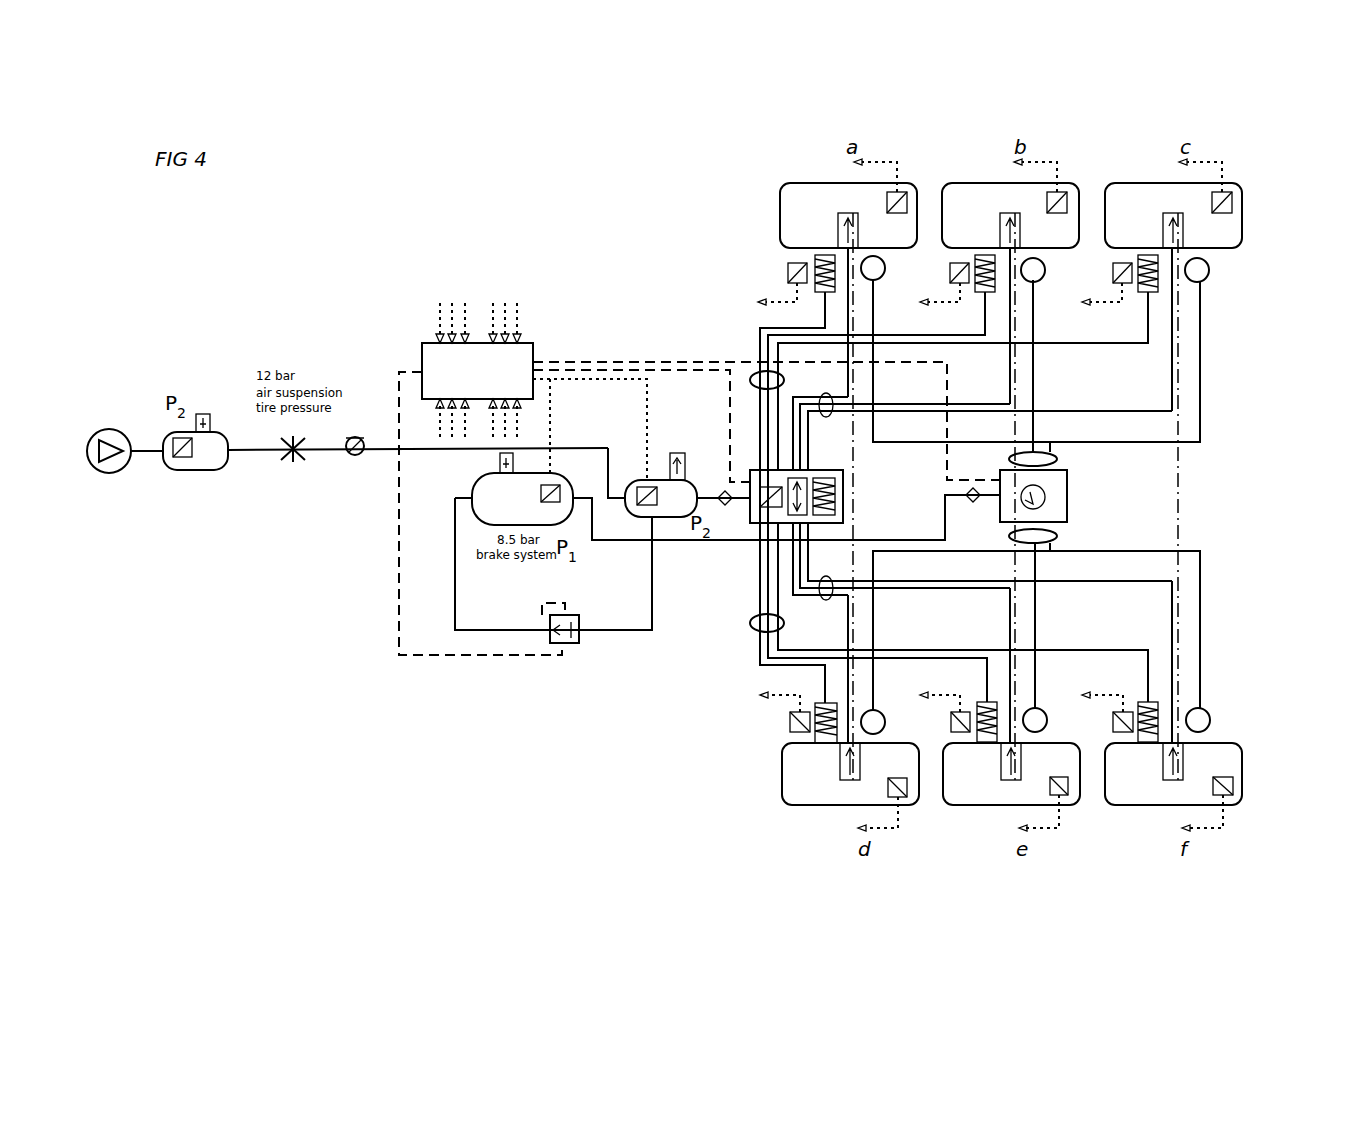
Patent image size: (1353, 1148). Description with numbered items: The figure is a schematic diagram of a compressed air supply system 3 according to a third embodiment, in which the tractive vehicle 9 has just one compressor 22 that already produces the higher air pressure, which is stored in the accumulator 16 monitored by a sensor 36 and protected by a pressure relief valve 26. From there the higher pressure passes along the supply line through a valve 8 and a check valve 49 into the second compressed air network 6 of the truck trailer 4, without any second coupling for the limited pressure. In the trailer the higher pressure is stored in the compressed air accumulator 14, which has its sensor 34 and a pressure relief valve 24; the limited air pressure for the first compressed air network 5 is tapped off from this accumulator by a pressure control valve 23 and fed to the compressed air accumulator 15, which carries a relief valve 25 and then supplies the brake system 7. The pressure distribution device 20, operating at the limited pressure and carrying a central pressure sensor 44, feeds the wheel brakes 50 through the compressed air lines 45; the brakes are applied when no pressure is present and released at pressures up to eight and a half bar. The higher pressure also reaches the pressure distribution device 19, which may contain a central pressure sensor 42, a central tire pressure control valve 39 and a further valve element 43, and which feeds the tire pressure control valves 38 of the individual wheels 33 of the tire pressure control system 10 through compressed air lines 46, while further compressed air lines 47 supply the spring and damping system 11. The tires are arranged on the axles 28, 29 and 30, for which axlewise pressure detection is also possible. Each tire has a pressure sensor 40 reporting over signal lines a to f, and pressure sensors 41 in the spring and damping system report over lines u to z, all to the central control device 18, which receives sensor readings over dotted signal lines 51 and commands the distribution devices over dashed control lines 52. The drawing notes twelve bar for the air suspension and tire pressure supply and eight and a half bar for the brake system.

The compressed air supply system 3 is at (1260, 312).
The truck trailer 4 is at (710, 260).
The first compressed air network 5 is at (455, 586).
The second compressed air network 6 is at (380, 450).
The brake system 7 is at (1067, 514).
The check valve 8 is at (293, 466).
The tractive vehicle 9 is at (185, 376).
The tire pressure control system 10 is at (838, 226).
The spring and damping system 11 is at (818, 294).
The compressed air accumulator 14 is at (624, 482).
The compressed air accumulator 15 is at (566, 478).
The accumulator 16 is at (218, 470).
The central control device 18 is at (530, 342).
The pressure distribution device 19 is at (843, 478).
The pressure distribution device 20 is at (1073, 488).
The compressor 22 is at (102, 432).
The pressure control valve 23 is at (579, 643).
The pressure relief valve 24 is at (686, 462).
The pressure relief valve 25 is at (498, 463).
The pressure relief valve 26 is at (212, 423).
The axle 28 is at (856, 455).
The axle 29 is at (1016, 380).
The axle 30 is at (1180, 480).
The wheel 33 is at (798, 194).
The sensor 34 is at (634, 512).
The sensor 36 is at (176, 462).
The tire pressure control valve 38 is at (862, 226).
The central tire pressure control valve 39 is at (778, 520).
The pressure sensor 40 is at (902, 192).
The pressure sensor 41 is at (788, 270).
The central pressure sensor 42 is at (736, 504).
The solenoid valve 43 is at (828, 520).
The central pressure sensor 44 is at (1000, 522).
The compressed air lines 45 is at (1057, 459).
The compressed air lines 46 is at (828, 414).
The compressed air lines 47 is at (784, 380).
The check valve 49 is at (352, 458).
The wheel brakes 50 is at (885, 268).
The signal line 51 is at (552, 398).
The control line 52 is at (605, 358).